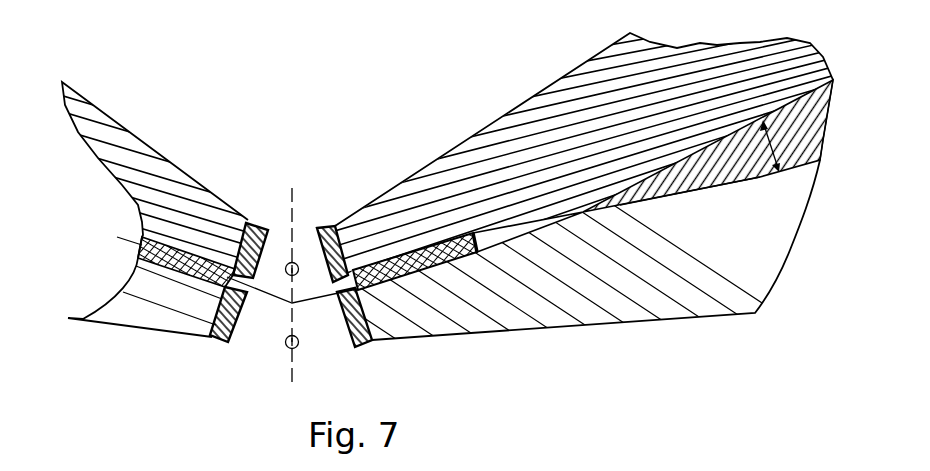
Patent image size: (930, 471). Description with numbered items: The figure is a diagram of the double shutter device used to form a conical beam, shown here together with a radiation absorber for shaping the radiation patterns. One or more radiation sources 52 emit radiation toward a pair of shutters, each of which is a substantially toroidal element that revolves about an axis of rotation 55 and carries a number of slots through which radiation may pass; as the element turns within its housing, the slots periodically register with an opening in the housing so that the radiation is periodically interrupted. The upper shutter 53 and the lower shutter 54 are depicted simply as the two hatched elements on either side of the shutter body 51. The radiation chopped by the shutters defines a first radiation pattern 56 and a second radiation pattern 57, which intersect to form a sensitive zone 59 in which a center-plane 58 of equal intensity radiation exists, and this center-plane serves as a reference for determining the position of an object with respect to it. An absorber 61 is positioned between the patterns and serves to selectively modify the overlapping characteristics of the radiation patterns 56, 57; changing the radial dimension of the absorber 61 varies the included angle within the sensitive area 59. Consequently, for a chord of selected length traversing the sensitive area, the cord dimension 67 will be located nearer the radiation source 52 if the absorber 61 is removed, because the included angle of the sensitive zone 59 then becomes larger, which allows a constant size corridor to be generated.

The left body member 51 is at (232, 384).
The radiation source 52 is at (286, 268).
The upper shutter 53 is at (269, 229).
The lower shutter 54 is at (238, 320).
The axis of rotation 55 is at (293, 196).
The first radiation pattern 56 is at (540, 103).
The second radiation pattern 57 is at (600, 318).
The center-plane 58 is at (757, 192).
The sensitive zone 59 is at (836, 85).
The absorber 61 is at (421, 232).
The cord dimension 67 is at (820, 93).